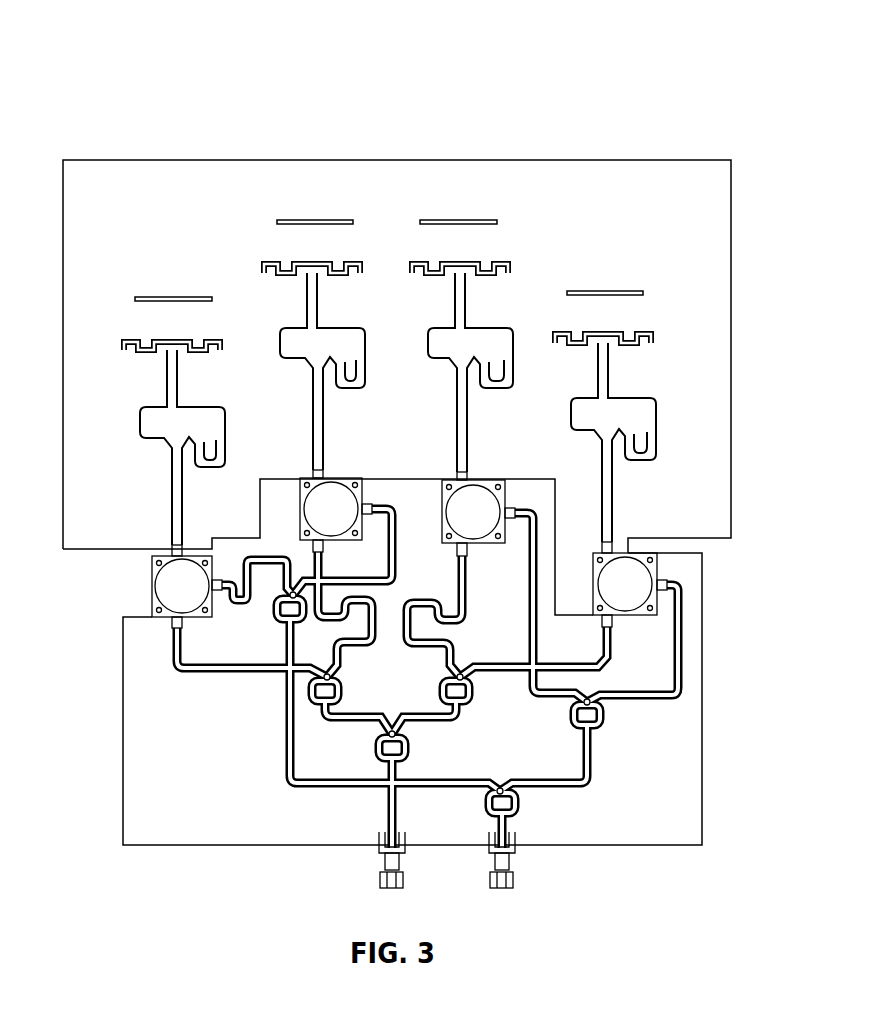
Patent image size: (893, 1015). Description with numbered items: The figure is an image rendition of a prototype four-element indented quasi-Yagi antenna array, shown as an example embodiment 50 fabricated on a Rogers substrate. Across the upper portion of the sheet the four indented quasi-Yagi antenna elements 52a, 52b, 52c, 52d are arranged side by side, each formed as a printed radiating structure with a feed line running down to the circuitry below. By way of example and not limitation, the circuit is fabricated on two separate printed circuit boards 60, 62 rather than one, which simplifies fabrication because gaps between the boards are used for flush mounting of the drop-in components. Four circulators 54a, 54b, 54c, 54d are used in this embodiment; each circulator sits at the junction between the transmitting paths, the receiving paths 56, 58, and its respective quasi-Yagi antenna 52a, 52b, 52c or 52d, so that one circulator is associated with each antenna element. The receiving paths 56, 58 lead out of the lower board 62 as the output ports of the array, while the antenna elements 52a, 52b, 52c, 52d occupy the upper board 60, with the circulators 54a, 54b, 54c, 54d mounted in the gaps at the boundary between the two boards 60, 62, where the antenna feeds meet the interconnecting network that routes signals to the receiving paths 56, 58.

The indented antenna array 50 is at (414, 450).
The quasi-Yagi antenna element 52a is at (119, 262).
The quasi-Yagi antenna element 52b is at (254, 207).
The quasi-Yagi antenna element 52c is at (398, 207).
The quasi-Yagi antenna element 52d is at (639, 258).
The circulator 54a is at (152, 580).
The circulator 54b is at (300, 497).
The circulator 54c is at (505, 497).
The circulator 54d is at (657, 568).
The receiving path 56 is at (380, 852).
The receiving path 58 is at (512, 851).
The printed circuit board 60 is at (705, 424).
The printed circuit board 62 is at (676, 776).